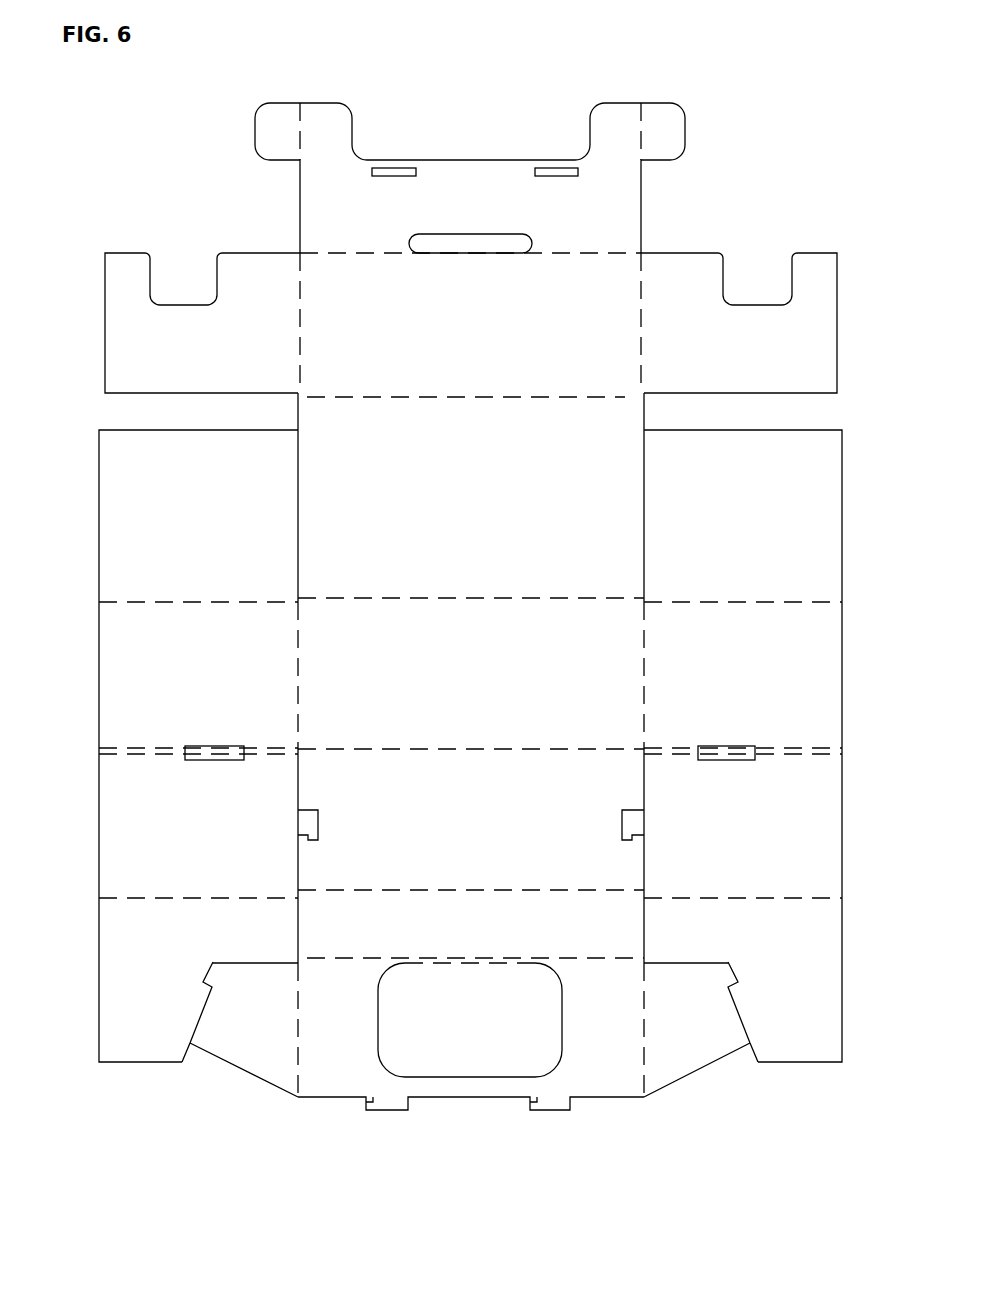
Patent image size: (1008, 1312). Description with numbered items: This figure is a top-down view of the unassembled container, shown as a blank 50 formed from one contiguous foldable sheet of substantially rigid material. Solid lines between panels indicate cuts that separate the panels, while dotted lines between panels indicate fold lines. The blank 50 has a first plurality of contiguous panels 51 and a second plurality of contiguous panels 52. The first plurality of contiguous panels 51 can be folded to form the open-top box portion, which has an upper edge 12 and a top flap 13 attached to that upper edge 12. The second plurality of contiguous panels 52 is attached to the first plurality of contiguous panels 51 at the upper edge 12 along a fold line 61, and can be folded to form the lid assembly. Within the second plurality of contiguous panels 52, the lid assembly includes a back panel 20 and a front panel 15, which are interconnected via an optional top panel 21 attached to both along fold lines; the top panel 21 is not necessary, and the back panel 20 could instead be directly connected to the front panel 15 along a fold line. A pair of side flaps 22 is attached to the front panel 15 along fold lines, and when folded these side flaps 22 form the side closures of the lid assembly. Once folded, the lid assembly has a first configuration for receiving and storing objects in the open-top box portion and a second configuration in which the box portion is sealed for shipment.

The blank 50 is at (703, 193).
The top flap 13 is at (469, 180).
The upper edge 12 is at (358, 255).
The first plurality of contiguous panels 51 is at (577, 703).
The fold line 61 is at (435, 750).
The back panel 20 is at (597, 782).
The top panel 21 is at (597, 931).
The front panel 15 is at (605, 1022).
The side flaps 22 is at (234, 1022).
The second plurality of contiguous panels 52 is at (468, 1097).